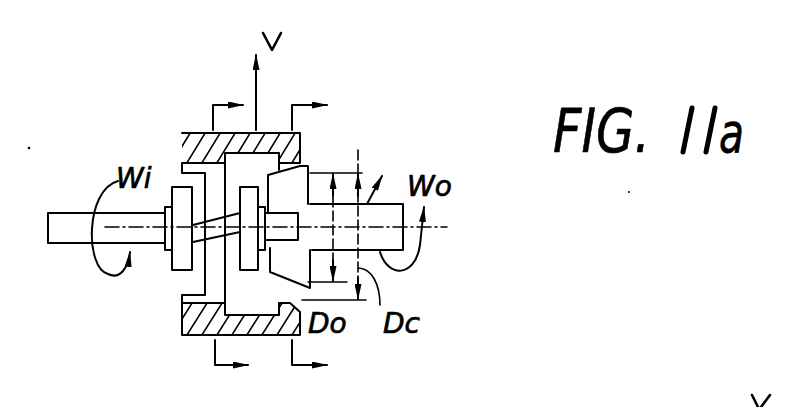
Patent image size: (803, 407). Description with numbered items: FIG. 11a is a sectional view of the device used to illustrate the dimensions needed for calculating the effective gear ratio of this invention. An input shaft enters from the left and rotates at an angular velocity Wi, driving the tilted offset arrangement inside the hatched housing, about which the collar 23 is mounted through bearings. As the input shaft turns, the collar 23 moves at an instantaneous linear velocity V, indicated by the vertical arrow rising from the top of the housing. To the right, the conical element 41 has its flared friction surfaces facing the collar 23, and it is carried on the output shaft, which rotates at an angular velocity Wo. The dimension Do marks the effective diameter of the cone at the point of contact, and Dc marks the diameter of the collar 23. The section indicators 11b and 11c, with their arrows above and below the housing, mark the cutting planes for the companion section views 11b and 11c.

The collar 23 is at (273, 133).
The conical element 41 is at (308, 165).
The section line 11b is at (226, 380).
The section line 11c is at (311, 380).